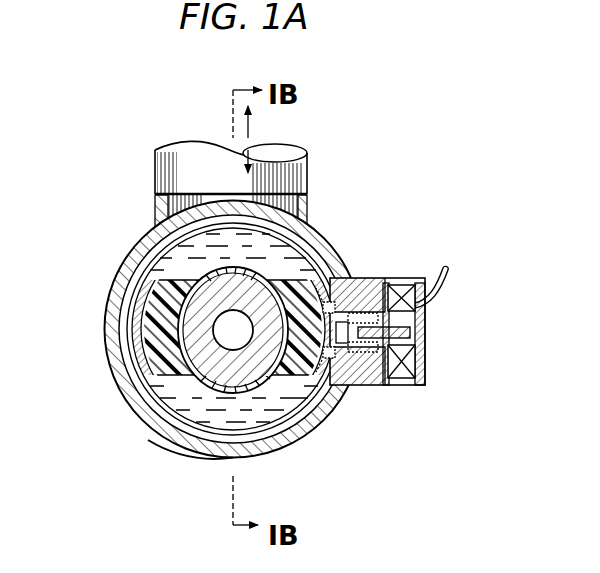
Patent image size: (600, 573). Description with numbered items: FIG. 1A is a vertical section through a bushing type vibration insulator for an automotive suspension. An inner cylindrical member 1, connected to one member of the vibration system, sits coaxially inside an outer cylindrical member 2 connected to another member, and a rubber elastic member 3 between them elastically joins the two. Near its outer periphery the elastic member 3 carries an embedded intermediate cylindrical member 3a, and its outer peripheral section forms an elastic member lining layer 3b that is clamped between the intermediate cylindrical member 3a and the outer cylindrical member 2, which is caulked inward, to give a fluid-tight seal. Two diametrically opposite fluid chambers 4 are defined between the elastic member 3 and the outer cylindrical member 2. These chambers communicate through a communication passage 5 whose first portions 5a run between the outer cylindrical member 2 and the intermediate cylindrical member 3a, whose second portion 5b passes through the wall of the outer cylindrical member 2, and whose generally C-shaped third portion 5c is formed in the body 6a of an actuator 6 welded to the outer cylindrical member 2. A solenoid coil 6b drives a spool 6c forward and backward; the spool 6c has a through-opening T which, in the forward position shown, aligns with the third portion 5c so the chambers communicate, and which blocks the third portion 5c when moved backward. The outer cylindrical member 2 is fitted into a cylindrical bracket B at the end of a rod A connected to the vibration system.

The rod A is at (174, 158).
The cylindrical bracket B is at (189, 443).
The through-opening T is at (381, 308).
The inner cylindrical member 1 is at (175, 383).
The outer cylindrical member 2 is at (292, 427).
The elastic member 3 is at (203, 361).
The intermediate cylindrical member 3a is at (146, 289).
The elastic member lining layer 3b is at (135, 325).
The fluid chamber 4 is at (284, 254).
The communication passage 5 is at (370, 296).
The first portion 5a is at (342, 302).
The second portion 5b is at (363, 300).
The third portion 5c is at (381, 385).
The actuator 6 is at (409, 276).
The actuator body 6a is at (420, 288).
The solenoid coil 6b is at (428, 363).
The spool 6c is at (411, 330).